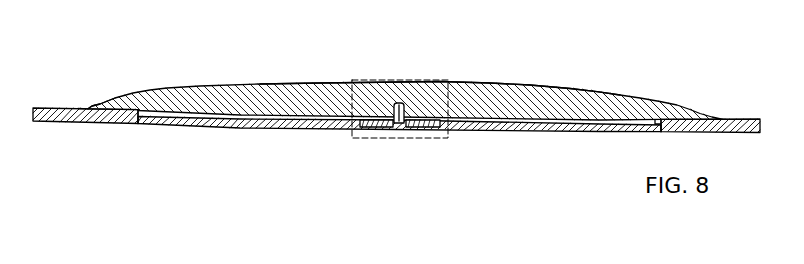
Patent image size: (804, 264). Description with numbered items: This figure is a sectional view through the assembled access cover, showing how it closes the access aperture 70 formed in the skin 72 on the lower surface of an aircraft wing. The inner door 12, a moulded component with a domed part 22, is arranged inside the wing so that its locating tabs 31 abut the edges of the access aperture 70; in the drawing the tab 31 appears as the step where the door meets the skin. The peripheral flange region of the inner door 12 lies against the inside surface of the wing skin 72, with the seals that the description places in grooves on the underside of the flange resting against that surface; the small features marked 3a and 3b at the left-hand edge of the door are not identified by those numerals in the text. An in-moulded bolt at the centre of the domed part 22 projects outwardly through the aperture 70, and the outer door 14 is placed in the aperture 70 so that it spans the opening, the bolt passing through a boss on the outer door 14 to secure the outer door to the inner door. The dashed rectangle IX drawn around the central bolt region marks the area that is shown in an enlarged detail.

The first edge portion of cover 3a is at (78, 108).
The second edge portion of cover 3b is at (90, 108).
The inner door 12 is at (678, 105).
The outer door 14 is at (533, 132).
The domed part 22 is at (508, 87).
The locating tabs 31 is at (139, 124).
The access aperture 70 is at (647, 128).
The skin 72 is at (747, 132).
The detail IX is at (428, 80).